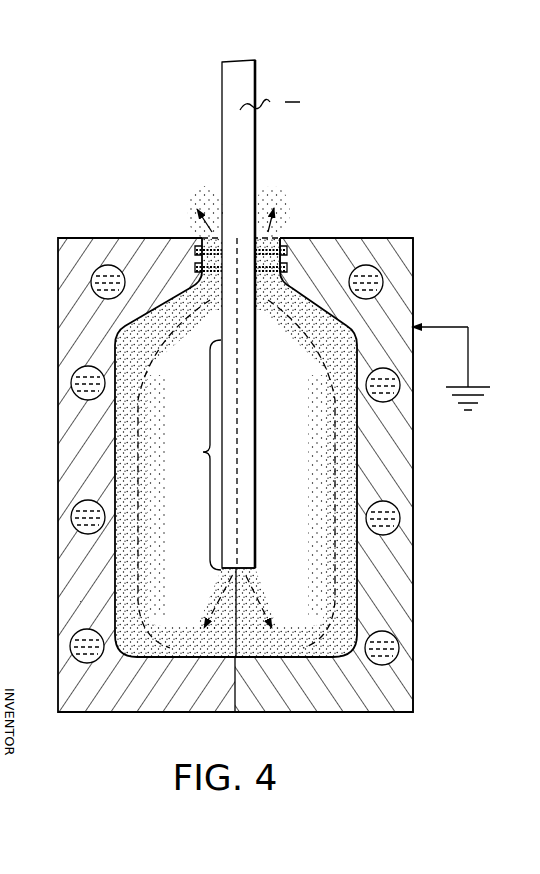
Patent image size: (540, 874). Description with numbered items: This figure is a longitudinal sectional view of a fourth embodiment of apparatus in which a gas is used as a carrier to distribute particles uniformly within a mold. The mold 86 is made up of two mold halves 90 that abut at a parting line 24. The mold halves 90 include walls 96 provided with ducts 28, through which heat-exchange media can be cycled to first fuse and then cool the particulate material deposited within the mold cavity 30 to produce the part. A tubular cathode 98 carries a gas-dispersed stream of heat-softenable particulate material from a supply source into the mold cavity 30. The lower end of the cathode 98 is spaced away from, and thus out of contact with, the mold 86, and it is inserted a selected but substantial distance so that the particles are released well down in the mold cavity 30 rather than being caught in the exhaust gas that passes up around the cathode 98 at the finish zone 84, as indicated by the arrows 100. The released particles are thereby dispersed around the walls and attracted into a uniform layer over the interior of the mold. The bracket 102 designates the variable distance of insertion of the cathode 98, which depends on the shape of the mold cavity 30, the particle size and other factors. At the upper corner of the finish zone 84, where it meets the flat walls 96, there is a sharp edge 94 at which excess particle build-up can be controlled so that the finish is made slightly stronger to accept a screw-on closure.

The parting line 24 is at (236, 605).
The ducts 28 is at (375, 279).
The mold cavity 30 is at (126, 628).
The finish zone 84 is at (176, 221).
The mold 86 is at (198, 716).
The mold halves 90 is at (416, 488).
The sharp edge 94 is at (294, 228).
The walls 96 is at (378, 238).
The tubular cathode 98 is at (225, 148).
The arrows 100 is at (276, 216).
The bracket 102 is at (192, 455).